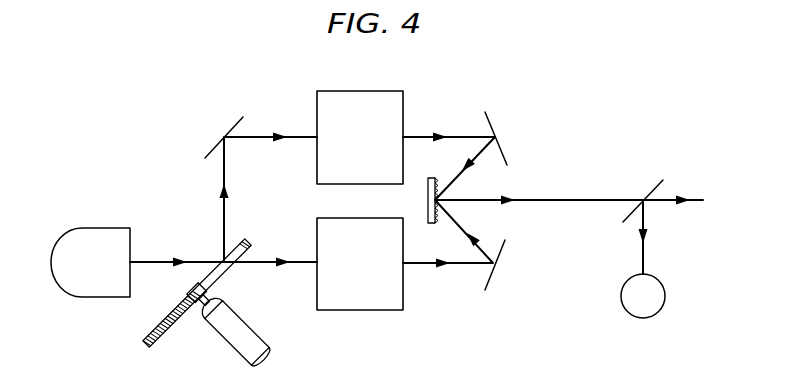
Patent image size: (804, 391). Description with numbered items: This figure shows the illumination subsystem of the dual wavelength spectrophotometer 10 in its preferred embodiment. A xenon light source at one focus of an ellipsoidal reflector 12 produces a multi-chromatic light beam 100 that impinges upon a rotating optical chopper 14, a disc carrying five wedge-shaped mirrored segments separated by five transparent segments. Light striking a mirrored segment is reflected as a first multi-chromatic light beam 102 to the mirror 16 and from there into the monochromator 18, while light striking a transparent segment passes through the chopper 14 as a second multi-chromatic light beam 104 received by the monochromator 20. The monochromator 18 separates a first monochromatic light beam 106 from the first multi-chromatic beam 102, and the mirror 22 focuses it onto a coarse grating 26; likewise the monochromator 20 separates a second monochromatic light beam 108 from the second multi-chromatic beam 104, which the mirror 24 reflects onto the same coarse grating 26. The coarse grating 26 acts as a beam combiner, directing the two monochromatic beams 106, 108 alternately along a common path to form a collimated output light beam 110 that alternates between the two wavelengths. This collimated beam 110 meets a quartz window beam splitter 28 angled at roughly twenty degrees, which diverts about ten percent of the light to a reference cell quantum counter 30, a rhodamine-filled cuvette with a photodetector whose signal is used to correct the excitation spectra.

The dual wavelength spectrophotometer 10 is at (262, 66).
The ellipsoidal reflector 12 is at (70, 228).
The rotating optical chopper 14 is at (150, 318).
The mirror 16 is at (232, 127).
The monochromator 18 is at (381, 91).
The monochromator 20 is at (374, 311).
The mirror 22 is at (489, 122).
The mirror 24 is at (496, 288).
The coarse grating 26 is at (431, 178).
The quartz window beam splitter 28 is at (650, 193).
The reference cell quantum counter 30 is at (621, 293).
The multi-chromatic light beam 100 is at (158, 262).
The first multi-chromatic light beam 102 is at (299, 137).
The second multi-chromatic light beam 104 is at (302, 264).
The first monochromatic light beam 106 is at (421, 137).
The second monochromatic light beam 108 is at (456, 221).
The collimated output light beam 110 is at (564, 203).